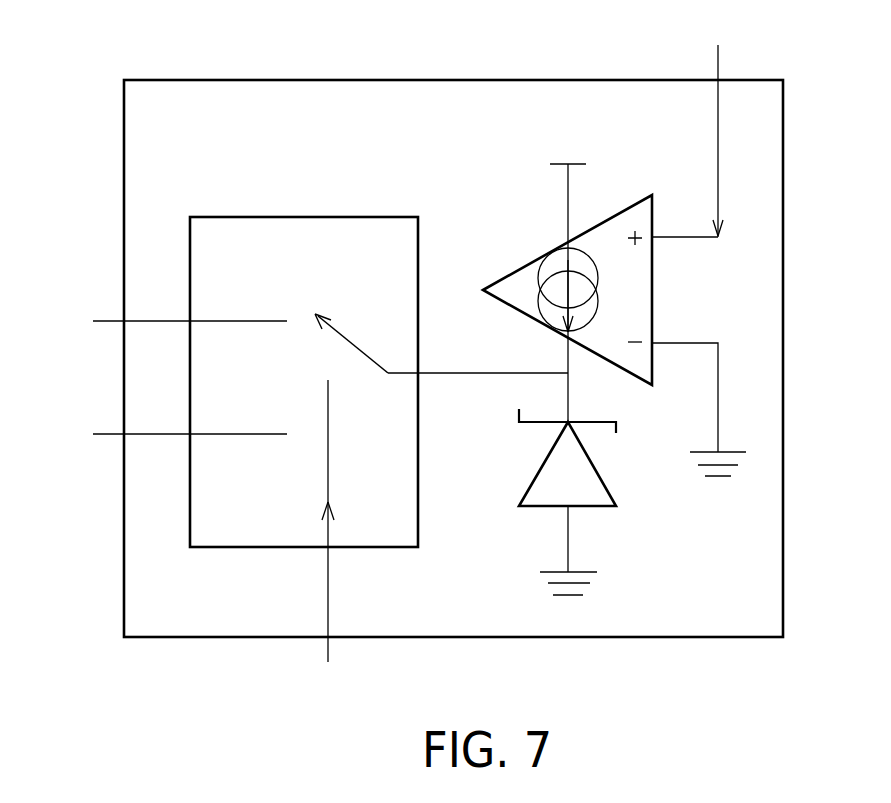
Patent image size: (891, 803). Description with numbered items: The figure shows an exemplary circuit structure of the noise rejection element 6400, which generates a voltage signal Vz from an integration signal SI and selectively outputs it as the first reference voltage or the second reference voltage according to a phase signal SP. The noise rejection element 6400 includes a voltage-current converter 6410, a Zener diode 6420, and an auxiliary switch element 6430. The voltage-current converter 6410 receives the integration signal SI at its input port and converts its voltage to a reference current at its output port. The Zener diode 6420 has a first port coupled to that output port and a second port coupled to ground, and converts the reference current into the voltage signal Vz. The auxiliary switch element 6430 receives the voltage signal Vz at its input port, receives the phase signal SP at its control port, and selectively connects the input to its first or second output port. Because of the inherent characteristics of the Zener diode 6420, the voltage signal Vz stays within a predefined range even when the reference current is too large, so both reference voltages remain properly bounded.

The noise rejection element 6400 is at (784, 120).
The voltage-current converter 6410 is at (628, 208).
The Zener diode 6420 is at (597, 507).
The auxiliary switch element 6430 is at (301, 217).